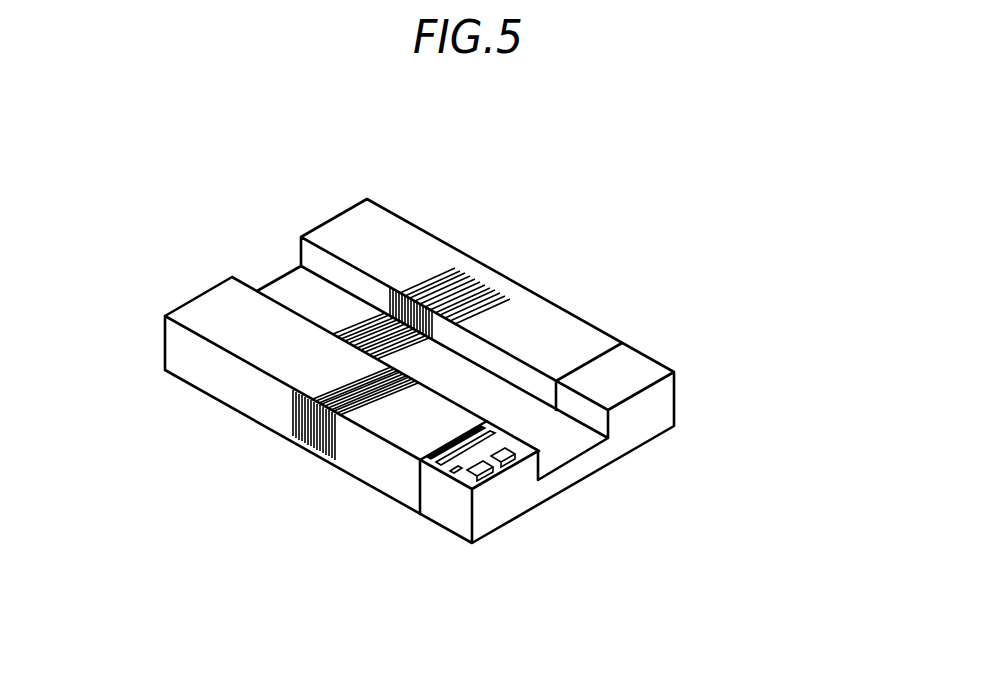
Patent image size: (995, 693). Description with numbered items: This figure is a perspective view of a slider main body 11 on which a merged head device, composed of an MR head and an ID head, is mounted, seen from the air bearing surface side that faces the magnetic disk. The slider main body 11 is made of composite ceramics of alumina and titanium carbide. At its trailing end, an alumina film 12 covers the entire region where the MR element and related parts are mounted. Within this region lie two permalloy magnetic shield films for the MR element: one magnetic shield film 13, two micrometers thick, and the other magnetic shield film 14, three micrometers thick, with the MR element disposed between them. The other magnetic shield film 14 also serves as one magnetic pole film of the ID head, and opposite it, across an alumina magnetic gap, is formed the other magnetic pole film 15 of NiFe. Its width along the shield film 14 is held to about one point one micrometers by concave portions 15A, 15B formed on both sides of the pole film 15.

The slider main body 11 is at (340, 228).
The alumina film 12 is at (421, 488).
The one magnetic shield film 13 is at (453, 437).
The other magnetic shield film 14 is at (492, 430).
The other magnetic pole film 15 is at (495, 470).
The concave portion 15A is at (457, 473).
The concave portion 15B is at (513, 452).